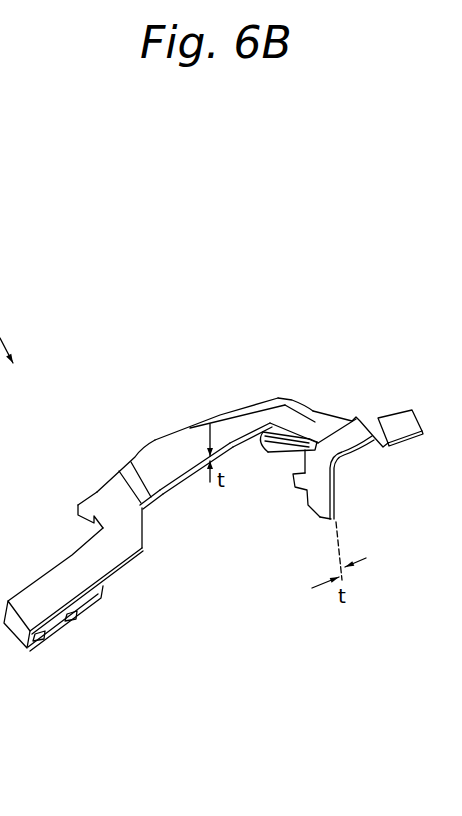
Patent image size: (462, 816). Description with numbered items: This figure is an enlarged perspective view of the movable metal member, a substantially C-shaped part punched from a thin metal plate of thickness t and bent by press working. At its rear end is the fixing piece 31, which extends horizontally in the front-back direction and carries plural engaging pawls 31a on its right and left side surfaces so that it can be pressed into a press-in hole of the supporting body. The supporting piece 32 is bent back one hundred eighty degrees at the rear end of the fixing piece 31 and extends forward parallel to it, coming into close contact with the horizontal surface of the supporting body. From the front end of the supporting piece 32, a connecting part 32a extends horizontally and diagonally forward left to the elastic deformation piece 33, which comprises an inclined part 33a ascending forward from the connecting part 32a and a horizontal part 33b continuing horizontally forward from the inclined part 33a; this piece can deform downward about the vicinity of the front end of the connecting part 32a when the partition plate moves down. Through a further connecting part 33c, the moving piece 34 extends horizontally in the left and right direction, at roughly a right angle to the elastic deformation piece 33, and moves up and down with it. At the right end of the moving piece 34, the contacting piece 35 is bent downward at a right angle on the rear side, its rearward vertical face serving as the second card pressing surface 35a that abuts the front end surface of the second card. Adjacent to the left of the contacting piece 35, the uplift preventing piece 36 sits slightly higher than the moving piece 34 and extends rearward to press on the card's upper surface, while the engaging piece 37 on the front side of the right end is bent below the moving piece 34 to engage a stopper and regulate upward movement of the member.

The fixing piece 31 is at (60, 641).
The engaging pawls 31a is at (72, 618).
The supporting piece 32 is at (92, 567).
The connecting part 32a is at (125, 534).
The elastic deformation piece 33 is at (199, 405).
The inclined part 33a is at (142, 476).
The horizontal part 33b is at (187, 437).
The connecting part 33c is at (262, 407).
The moving piece 34 is at (313, 417).
The contacting piece 35 is at (331, 509).
The second card pressing surface 35a is at (317, 517).
The uplift preventing piece 36 is at (275, 442).
The engaging piece 37 is at (395, 421).